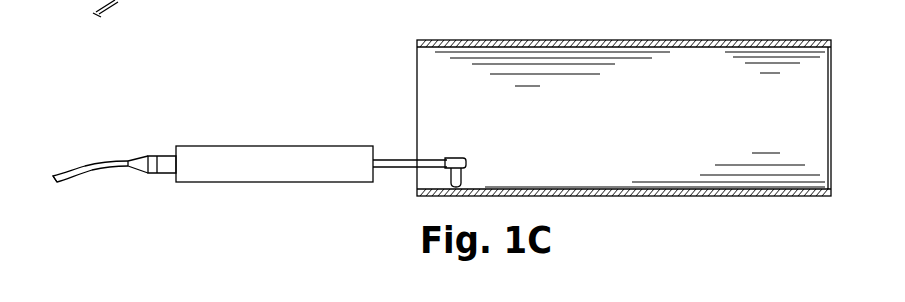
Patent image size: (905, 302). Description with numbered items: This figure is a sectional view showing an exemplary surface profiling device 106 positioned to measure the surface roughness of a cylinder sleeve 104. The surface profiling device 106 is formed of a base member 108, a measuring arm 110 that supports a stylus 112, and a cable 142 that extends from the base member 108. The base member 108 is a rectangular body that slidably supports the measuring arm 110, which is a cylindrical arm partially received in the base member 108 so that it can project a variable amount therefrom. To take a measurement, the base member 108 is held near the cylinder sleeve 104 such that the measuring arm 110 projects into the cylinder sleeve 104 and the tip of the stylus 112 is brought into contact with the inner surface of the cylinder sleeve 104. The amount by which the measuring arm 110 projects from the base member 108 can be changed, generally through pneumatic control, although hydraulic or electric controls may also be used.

The cylinder sleeve 104 is at (637, 88).
The surface profiling device 106 is at (268, 112).
The base member 108 is at (218, 158).
The measuring arm 110 is at (395, 165).
The stylus 112 is at (454, 184).
The cable 142 is at (67, 165).